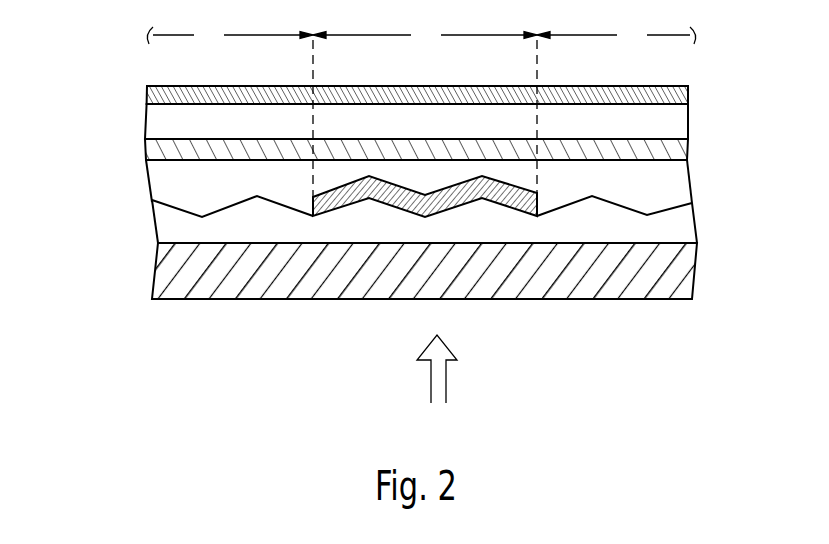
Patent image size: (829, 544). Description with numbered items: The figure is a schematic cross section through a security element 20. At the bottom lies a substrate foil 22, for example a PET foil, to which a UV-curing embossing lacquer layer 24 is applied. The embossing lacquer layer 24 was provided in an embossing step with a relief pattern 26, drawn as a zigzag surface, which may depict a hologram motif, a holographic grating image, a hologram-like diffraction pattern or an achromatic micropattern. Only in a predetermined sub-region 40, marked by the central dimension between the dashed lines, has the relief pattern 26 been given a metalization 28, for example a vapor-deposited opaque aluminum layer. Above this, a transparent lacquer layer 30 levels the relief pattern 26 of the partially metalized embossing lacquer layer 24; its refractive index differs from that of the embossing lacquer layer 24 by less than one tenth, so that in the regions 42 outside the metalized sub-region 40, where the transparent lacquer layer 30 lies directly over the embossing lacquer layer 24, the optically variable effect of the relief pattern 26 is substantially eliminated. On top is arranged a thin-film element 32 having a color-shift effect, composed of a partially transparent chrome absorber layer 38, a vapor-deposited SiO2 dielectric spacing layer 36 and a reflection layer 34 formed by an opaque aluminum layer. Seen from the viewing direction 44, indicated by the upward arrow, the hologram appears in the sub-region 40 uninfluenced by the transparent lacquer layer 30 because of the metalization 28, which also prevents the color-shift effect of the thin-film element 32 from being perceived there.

The security element 20 is at (92, 62).
The substrate foil 22 is at (677, 273).
The embossing lacquer layer 24 is at (680, 232).
The relief pattern 26 is at (690, 213).
The metalization 28 is at (519, 207).
The transparent lacquer layer 30 is at (160, 182).
The thin-film element 32 is at (752, 82).
The reflection layer 34 is at (688, 97).
The dielectric spacing layer 36 is at (673, 120).
The absorber layer 38 is at (683, 150).
The sub-region 40 is at (425, 119).
The regions outside the metalized sub-regions 42 is at (421, 36).
The viewing direction 44 is at (446, 380).